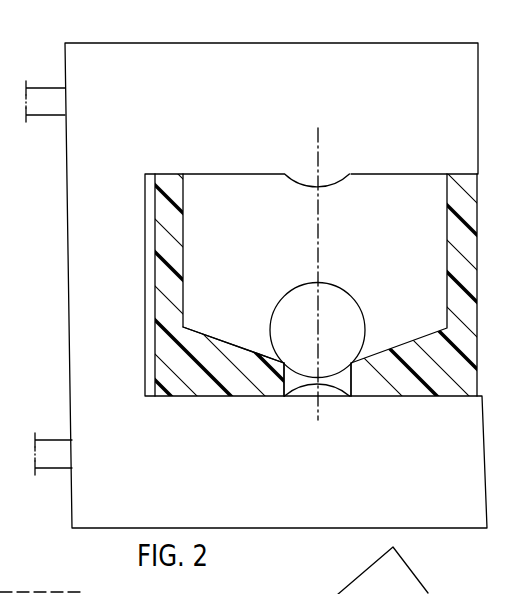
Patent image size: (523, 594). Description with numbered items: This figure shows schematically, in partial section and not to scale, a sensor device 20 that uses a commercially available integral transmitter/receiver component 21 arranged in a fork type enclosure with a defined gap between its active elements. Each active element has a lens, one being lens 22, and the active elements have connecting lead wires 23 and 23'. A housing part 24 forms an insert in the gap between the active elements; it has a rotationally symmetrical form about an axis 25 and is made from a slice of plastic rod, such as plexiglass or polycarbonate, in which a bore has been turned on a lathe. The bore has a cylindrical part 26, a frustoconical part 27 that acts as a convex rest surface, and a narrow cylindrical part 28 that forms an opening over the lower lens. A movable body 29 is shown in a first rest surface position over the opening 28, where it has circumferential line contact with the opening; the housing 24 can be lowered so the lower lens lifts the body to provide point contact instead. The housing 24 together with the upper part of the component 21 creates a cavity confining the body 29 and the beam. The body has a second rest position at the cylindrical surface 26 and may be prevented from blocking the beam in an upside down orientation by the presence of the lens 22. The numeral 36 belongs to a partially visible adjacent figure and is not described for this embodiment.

In FIG. 2, the sensor device 20 is at (138, 29).
In FIG. 2, the integral transmitter/receiver component 21 is at (167, 104).
In FIG. 2, the lens 22 is at (326, 178).
In FIG. 2, the connecting lead wire 23 is at (45, 82).
In FIG. 2, the connecting lead wire 23' is at (51, 440).
In FIG. 2, the housing part 24 is at (448, 225).
In FIG. 2, the axis 25 is at (319, 438).
In FIG. 2, the cylindrical part 26 is at (186, 226).
In FIG. 2, the frustoconical part 27 is at (236, 345).
In FIG. 2, the narrow cylindrical part 28 is at (281, 395).
In FIG. 2, the movable body 29 is at (309, 334).
In FIG. 3, the roof-shaped member 36 is at (430, 583).